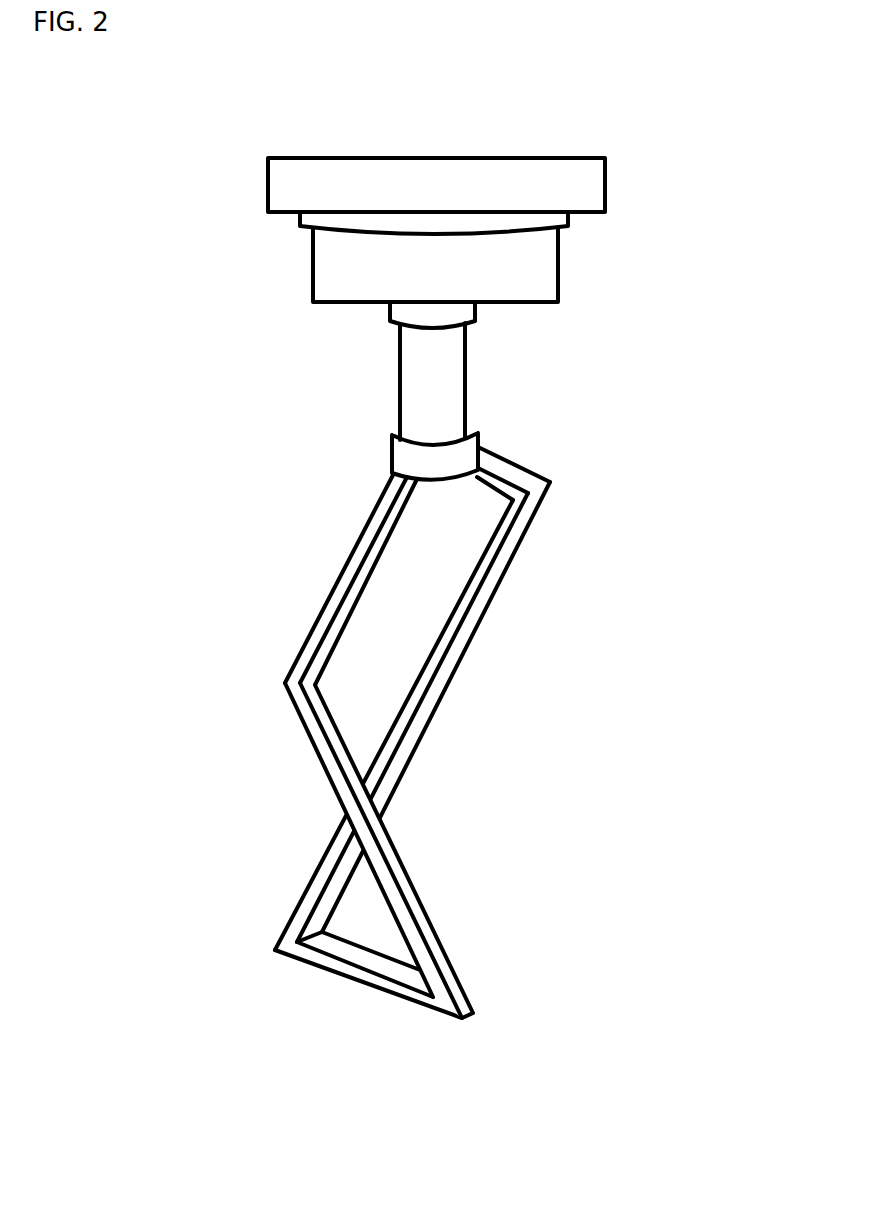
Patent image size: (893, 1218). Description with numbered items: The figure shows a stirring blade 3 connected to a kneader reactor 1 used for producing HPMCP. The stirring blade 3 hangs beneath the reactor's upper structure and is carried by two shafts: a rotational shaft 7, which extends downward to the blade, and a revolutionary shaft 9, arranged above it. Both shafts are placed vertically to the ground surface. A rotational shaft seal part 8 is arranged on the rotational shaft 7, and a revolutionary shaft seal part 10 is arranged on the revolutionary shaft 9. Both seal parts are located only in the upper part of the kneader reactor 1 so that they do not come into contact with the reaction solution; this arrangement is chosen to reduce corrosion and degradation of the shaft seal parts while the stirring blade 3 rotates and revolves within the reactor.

The kneader reactor 1 is at (619, 172).
The stirring blade 3 is at (493, 562).
The rotational shaft 7 is at (417, 415).
The rotational shaft seal part 8 is at (455, 315).
The revolutionary shaft 9 is at (333, 265).
The revolutionary shaft seal part 10 is at (547, 220).